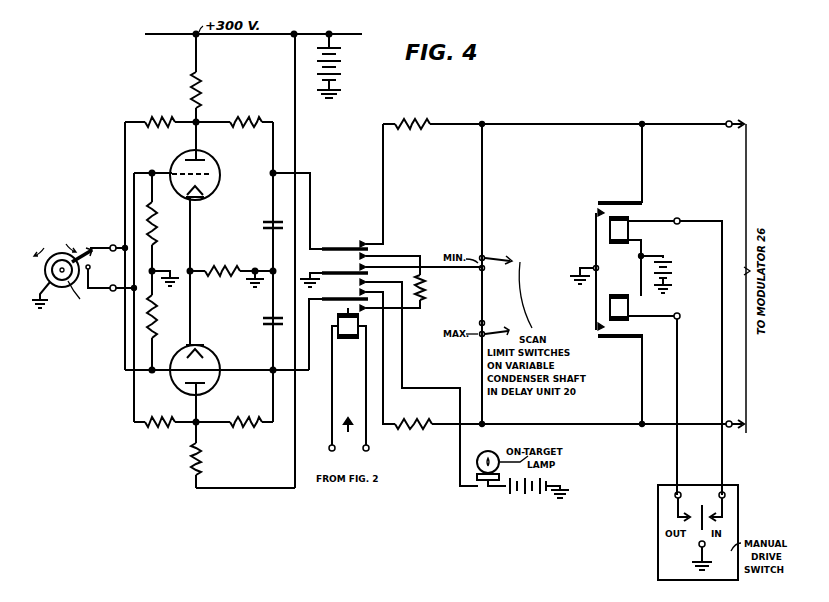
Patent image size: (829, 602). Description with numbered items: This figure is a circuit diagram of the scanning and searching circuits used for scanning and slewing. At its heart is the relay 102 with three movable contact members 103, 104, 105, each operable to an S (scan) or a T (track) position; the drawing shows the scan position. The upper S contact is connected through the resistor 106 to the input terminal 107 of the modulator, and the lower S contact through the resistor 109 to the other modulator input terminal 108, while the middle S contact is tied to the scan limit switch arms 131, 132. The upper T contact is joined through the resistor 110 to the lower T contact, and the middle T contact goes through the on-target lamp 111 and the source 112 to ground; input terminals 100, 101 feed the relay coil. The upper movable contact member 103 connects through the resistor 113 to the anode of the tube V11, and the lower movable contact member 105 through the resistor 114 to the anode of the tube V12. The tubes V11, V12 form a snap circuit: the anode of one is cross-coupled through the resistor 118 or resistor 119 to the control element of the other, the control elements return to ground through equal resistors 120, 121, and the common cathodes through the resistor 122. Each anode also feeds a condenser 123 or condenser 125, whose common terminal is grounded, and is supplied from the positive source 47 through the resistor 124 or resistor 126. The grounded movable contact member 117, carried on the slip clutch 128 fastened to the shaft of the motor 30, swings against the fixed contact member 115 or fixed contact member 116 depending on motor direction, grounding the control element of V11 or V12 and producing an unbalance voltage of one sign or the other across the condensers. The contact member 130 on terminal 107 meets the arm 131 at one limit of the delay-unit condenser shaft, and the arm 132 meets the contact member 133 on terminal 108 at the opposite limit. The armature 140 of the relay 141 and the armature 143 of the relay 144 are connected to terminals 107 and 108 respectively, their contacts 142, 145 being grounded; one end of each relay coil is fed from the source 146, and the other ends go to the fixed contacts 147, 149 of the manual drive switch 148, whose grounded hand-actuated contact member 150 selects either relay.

The source 47 is at (320, 63).
The input terminal from fig. 2 100 is at (329, 458).
The input terminal from fig. 2 101 is at (366, 458).
The relay 102 is at (345, 328).
The upper movable contact member 103 is at (336, 246).
The middle movable contact member 104 is at (337, 271).
The lower movable contact member 105 is at (338, 297).
The resistor 106 is at (412, 118).
The input terminal 107 is at (724, 114).
The input terminal 108 is at (729, 427).
The resistor 109 is at (404, 422).
The resistor 110 is at (425, 286).
The on-target lamp 111 is at (490, 450).
The source 112 is at (516, 494).
The resistor 113 is at (244, 116).
The resistor 114 is at (259, 416).
The fixed contact member 115 is at (90, 272).
The fixed contact member 116 is at (91, 252).
The movable contact member 117 is at (83, 249).
The resistor 118 is at (168, 115).
The resistor 119 is at (169, 416).
The resistor 120 is at (155, 218).
The resistor 121 is at (155, 312).
The resistor 122 is at (231, 264).
The condenser 123 is at (270, 219).
The resistor 124 is at (203, 80).
The condenser 125 is at (270, 316).
The resistor 126 is at (203, 458).
The slip clutch 128 is at (48, 279).
The contact member 130 is at (518, 242).
The contact member 131 is at (514, 268).
The contact member 132 is at (496, 301).
The contact member 133 is at (490, 328).
The armature 140 is at (633, 198).
The relay 141 is at (611, 242).
The contact 142 is at (598, 207).
The armature 143 is at (628, 341).
The relay 144 is at (629, 295).
The contact 145 is at (612, 331).
The source 146 is at (675, 276).
The fixed contact 147 is at (732, 514).
The manual drive switch 148 is at (660, 553).
The fixed contact member 149 is at (668, 510).
The movable hand-actuated contact member 150 is at (698, 543).
The tube V11 is at (221, 175).
The tube V12 is at (221, 370).
The motor 30 is at (62, 276).